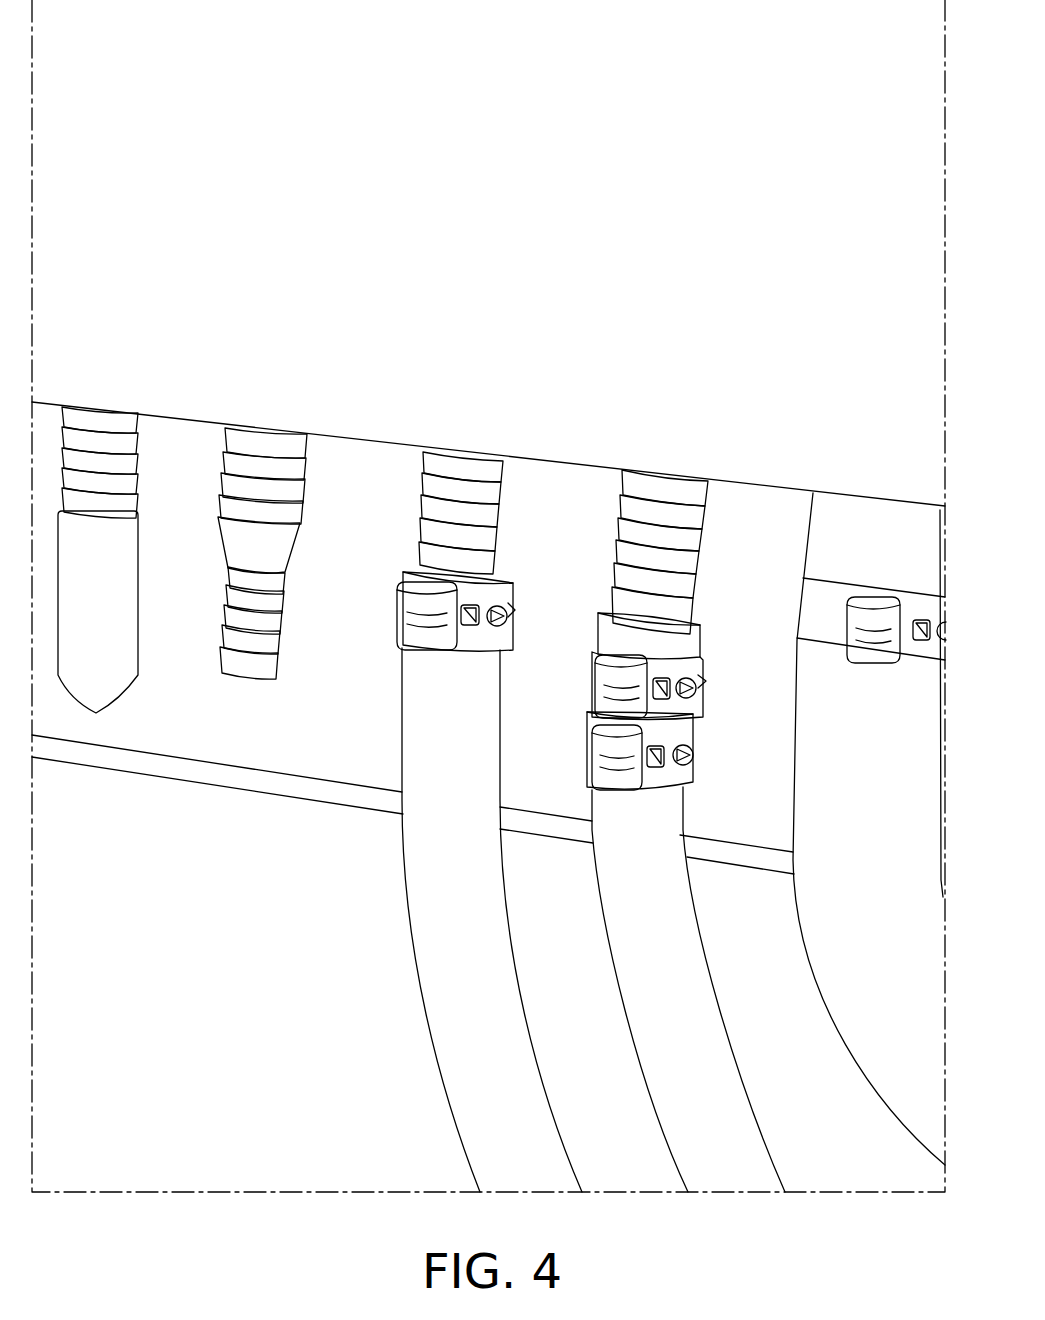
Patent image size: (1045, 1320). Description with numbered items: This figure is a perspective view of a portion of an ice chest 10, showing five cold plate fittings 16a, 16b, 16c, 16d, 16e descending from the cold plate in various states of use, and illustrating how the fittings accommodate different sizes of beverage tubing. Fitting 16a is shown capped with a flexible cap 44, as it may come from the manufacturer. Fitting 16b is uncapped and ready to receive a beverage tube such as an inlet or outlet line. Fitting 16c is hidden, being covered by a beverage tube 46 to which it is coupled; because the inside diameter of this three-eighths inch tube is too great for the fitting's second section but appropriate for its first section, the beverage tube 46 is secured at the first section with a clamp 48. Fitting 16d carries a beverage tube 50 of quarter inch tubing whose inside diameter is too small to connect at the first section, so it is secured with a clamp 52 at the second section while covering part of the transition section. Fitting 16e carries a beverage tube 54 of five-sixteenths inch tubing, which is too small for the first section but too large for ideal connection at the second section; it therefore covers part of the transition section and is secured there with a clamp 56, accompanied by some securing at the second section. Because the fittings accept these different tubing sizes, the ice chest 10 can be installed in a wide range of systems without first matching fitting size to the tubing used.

The ice chest 10 is at (706, 393).
The fitting 16a is at (130, 443).
The fitting 16b is at (290, 492).
The fitting 16c is at (901, 554).
The fitting 16d is at (688, 535).
The fitting 16e is at (490, 512).
The flexible cap 44 is at (116, 583).
The beverage tube 46 is at (881, 756).
The clamp 48 is at (841, 636).
The beverage tube 50 is at (659, 848).
The clamp 52 is at (690, 703).
The beverage tube 54 is at (466, 726).
The clamp 56 is at (510, 637).